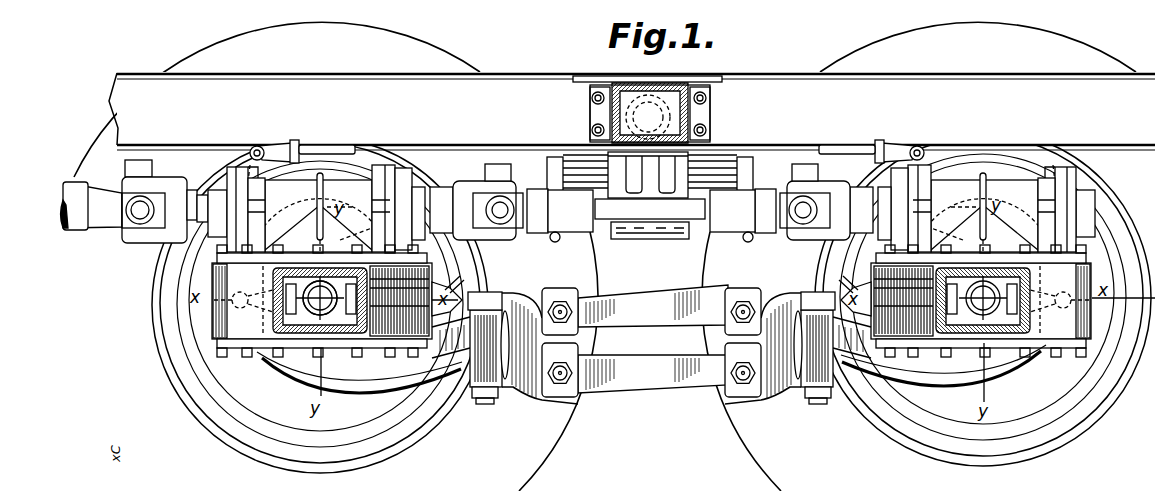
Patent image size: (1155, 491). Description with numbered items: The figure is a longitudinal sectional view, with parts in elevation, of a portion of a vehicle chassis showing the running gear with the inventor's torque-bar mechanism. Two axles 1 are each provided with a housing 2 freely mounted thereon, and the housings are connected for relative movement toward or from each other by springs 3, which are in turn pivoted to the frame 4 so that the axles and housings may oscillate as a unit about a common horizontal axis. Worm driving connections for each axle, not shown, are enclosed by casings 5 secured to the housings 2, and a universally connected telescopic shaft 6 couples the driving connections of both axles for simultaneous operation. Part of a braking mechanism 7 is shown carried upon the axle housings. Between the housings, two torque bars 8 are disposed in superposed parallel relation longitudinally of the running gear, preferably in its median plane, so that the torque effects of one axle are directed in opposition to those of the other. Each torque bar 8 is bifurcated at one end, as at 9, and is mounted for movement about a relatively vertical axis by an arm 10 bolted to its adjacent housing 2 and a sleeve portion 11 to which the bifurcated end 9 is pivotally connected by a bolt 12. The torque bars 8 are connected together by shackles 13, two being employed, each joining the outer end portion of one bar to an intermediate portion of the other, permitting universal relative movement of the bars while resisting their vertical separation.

The axle 1 is at (307, 341).
The housing 2 is at (212, 308).
The spring 3 is at (723, 155).
The frame 4 is at (797, 74).
The casing 5 is at (986, 208).
The universally connected telescopic shaft 6 is at (652, 220).
The braking mechanism 7 is at (278, 143).
The torque bar 8 is at (653, 339).
The bifurcated end 9 is at (506, 392).
The arm 10 is at (348, 383).
The sleeve portion 11 is at (470, 350).
The bolt 12 is at (492, 292).
The shackle 13 is at (651, 356).